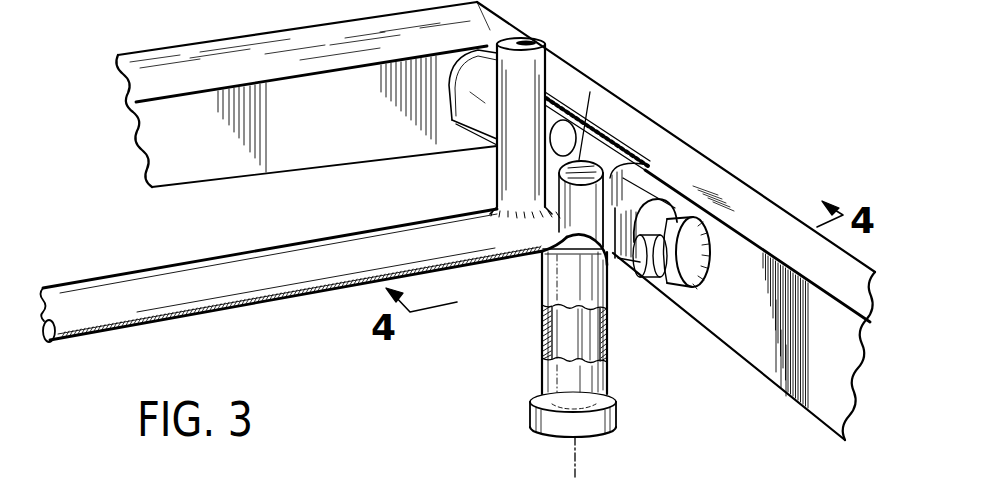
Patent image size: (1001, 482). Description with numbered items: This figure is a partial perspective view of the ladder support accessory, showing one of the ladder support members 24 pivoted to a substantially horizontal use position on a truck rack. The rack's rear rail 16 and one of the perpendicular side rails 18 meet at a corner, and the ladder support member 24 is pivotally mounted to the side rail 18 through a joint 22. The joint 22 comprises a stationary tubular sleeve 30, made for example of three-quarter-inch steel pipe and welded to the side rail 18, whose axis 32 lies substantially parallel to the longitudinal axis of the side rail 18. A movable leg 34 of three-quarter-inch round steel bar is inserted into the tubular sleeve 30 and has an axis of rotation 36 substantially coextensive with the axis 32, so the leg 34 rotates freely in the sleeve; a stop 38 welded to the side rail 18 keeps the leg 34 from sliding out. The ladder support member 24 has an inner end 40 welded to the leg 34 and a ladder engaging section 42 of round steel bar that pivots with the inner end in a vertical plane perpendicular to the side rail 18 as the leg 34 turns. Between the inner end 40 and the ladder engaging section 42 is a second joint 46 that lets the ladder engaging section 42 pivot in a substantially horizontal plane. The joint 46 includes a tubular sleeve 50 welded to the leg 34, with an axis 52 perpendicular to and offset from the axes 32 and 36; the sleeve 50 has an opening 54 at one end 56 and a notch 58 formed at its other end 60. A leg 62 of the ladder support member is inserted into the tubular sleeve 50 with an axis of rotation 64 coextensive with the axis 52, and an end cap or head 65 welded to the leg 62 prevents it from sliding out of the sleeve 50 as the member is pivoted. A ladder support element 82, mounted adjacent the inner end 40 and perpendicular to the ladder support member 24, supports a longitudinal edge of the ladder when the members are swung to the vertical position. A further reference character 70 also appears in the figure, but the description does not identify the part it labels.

The rear rail 16 is at (230, 37).
The side rail 18 is at (672, 140).
The joint 22 is at (623, 148).
The ladder support member 24 is at (289, 325).
The tubular sleeve 30 is at (473, 113).
The axis 32 is at (470, 92).
The leg 34 is at (561, 116).
The axis of rotation 36 is at (687, 192).
The stop 38 is at (676, 286).
The inner end 40 is at (623, 255).
The ladder engaging section 42 is at (175, 270).
The joint 46 is at (518, 275).
The tubular sleeve 50 is at (542, 374).
The axis 52 is at (588, 450).
The opening 54 is at (530, 395).
The end 56 is at (610, 386).
The notch 58 is at (570, 234).
The end 60 is at (684, 147).
The leg 62 is at (580, 206).
The axis of rotation 64 is at (585, 163).
The end cap or head 65 is at (530, 411).
The clamp ring 70 is at (565, 121).
The ladder support element 82 is at (533, 42).